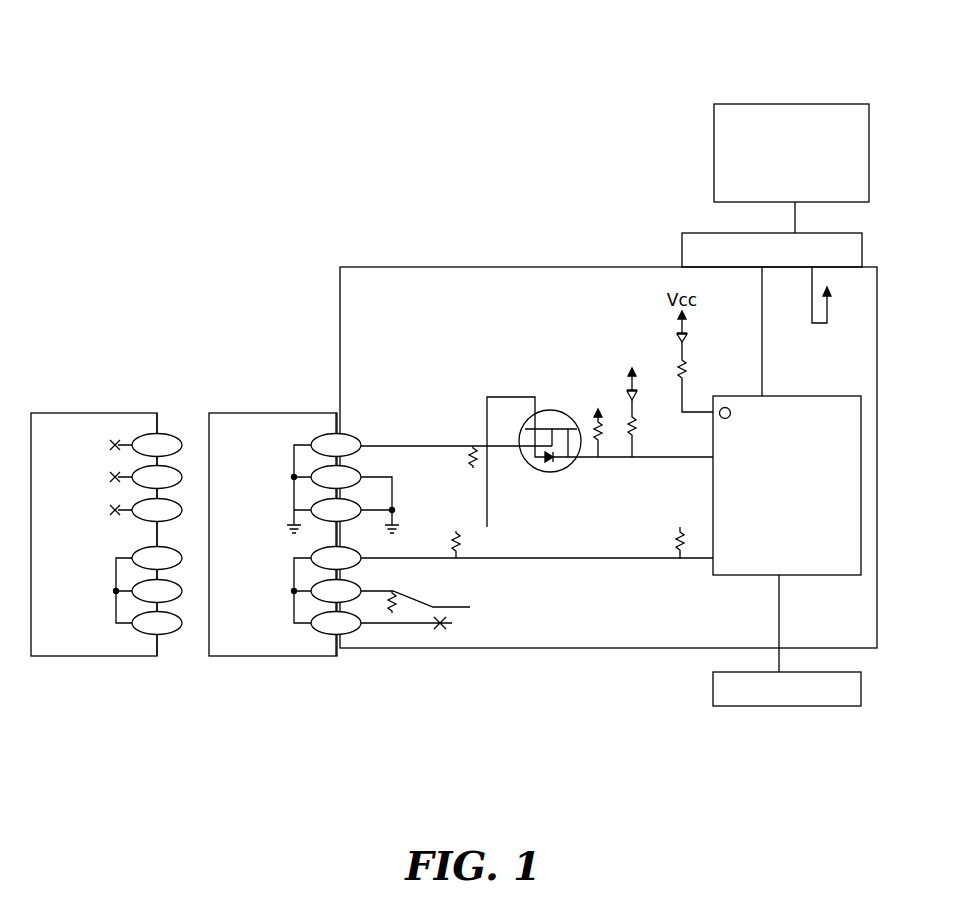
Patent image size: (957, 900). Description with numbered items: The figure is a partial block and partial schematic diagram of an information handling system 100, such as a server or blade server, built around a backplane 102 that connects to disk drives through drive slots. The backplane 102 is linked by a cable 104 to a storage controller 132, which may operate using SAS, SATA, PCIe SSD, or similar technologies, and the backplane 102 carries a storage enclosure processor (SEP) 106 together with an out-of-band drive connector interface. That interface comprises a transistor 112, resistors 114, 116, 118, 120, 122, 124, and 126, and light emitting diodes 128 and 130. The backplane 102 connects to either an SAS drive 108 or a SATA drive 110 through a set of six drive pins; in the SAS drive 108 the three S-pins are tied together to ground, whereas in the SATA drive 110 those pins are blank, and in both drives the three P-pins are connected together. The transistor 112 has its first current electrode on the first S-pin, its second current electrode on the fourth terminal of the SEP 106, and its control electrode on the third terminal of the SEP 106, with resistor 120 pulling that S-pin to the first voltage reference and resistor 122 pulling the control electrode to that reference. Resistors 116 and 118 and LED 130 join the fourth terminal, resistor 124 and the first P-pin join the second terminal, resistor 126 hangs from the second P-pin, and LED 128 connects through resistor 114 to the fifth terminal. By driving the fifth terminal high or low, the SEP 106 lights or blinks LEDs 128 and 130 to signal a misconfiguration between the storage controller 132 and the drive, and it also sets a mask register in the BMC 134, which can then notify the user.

The information handling system 100 is at (676, 89).
The backplane 102 is at (518, 648).
The cable 104 is at (728, 233).
The storage enclosure processor (SEP) 106 is at (787, 485).
The SAS drive 108 is at (275, 656).
The SATA drive 110 is at (145, 656).
The transistor 112 is at (557, 470).
The resistor 114 is at (682, 362).
The resistor 116 is at (632, 420).
The resistor 118 is at (597, 418).
The resistor 120 is at (467, 456).
The resistor 122 is at (673, 542).
The resistor 124 is at (459, 532).
The resistor 126 is at (437, 603).
The light emitting diode (LED) 128 is at (682, 335).
The light emitting diode (LED) 130 is at (632, 392).
The storage controller 132 is at (787, 689).
The BMC 134 is at (791, 153).